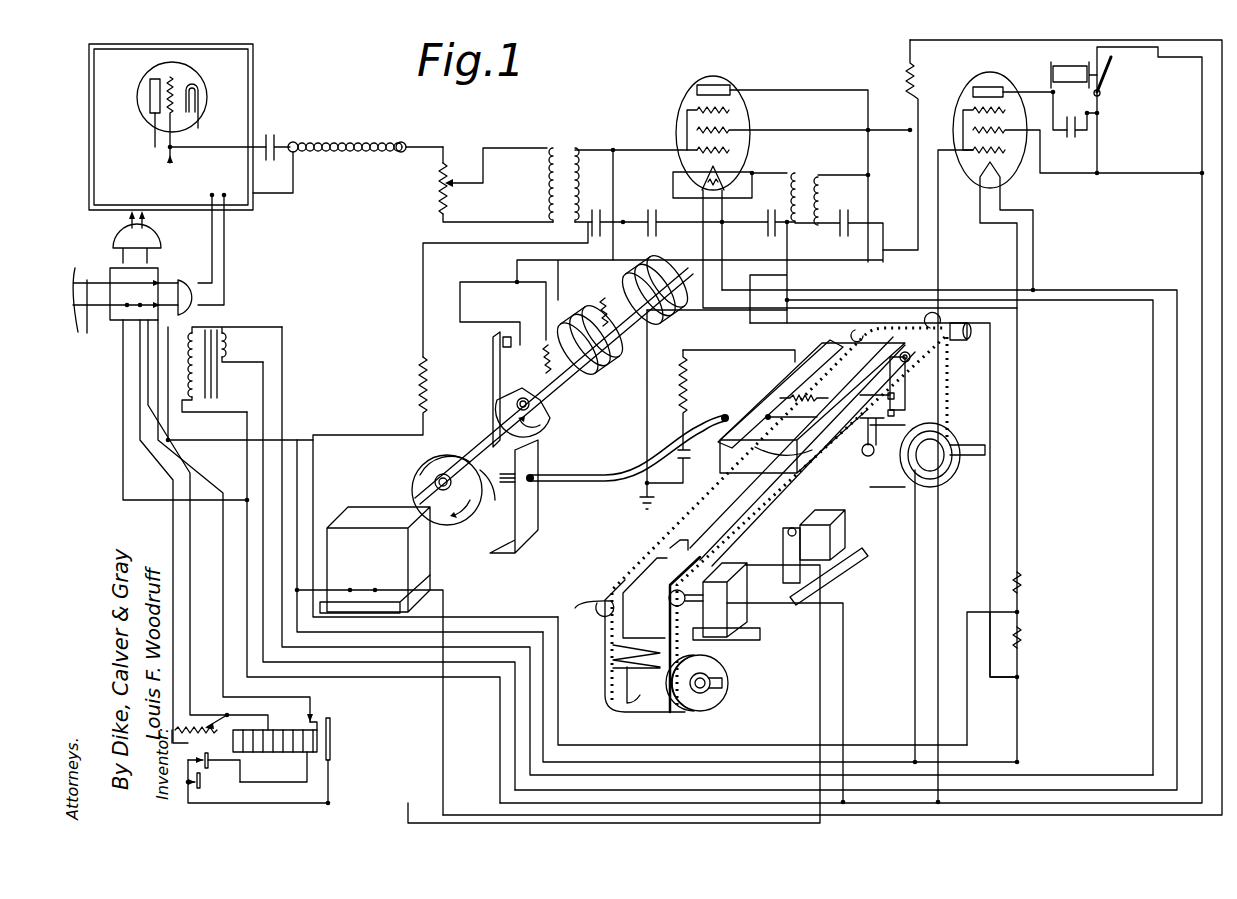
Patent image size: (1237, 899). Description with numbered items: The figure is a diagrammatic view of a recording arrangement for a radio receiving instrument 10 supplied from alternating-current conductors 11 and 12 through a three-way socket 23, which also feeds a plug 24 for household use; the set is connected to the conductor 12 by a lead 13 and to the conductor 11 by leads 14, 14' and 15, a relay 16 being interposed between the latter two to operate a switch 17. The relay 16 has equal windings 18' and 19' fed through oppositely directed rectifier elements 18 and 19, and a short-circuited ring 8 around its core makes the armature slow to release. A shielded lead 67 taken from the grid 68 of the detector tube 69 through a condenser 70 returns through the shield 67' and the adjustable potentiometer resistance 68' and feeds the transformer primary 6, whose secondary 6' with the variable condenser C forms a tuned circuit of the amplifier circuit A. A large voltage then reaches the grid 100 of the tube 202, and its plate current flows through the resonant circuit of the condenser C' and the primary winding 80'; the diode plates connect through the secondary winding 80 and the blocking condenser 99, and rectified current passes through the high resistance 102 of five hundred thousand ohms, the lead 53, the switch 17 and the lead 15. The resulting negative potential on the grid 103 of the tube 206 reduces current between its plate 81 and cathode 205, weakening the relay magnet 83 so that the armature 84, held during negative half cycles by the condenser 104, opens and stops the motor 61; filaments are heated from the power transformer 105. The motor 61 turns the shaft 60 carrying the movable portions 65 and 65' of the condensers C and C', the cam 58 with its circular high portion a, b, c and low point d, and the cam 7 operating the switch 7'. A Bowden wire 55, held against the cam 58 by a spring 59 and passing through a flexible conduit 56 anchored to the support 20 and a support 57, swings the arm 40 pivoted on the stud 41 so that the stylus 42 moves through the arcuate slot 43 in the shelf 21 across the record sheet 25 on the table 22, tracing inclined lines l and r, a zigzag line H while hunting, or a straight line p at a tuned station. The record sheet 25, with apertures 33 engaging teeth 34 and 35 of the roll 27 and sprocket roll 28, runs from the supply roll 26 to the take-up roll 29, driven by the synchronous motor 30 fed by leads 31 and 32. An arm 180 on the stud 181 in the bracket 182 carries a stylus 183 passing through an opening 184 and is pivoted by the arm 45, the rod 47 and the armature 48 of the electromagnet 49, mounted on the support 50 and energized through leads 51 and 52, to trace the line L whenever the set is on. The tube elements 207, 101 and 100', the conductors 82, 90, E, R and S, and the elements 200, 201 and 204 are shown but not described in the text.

The radio receiving instrument 10 is at (238, 63).
The detector tube 69 is at (150, 90).
The grid 68 is at (203, 117).
The plug 24 is at (153, 243).
The three-way socket 23 is at (120, 350).
The conductor 12 is at (125, 284).
The conductor 11 is at (84, 354).
The lead 13 is at (210, 262).
The lead 14 is at (232, 249).
The lead 15 is at (138, 392).
The lead 14' is at (197, 521).
The power transformer 105 is at (212, 380).
The condenser 70 is at (278, 141).
The shield 67' is at (348, 153).
The shielded lead 67 is at (480, 168).
The adjustable potentiometer resistance 68' is at (486, 170).
The radio-frequency transformer primary 6 is at (537, 185).
The transformer secondary 6' is at (555, 252).
The blocking condenser 99 is at (767, 226).
The amplifier tube 202 is at (740, 85).
The plate 207 is at (700, 90).
The grid 100 is at (799, 132).
The grid 101 is at (730, 170).
The cathode 100' is at (819, 235).
The tuned radio frequency amplifier circuit A is at (655, 144).
The secondary winding 80 is at (784, 248).
The primary winding 80' is at (841, 200).
The tube 206 is at (965, 88).
The plate 81 is at (1004, 88).
The grid 103 is at (997, 160).
The cathode 205 is at (978, 175).
The relay magnet 83 is at (1068, 70).
The armature 84 is at (1108, 76).
The condenser 104 is at (1071, 138).
The conductor 82 is at (1142, 106).
The conductor 90 is at (1145, 164).
The conductor E is at (1222, 232).
The conductor R is at (1183, 300).
The conductor S is at (1153, 485).
The high resistance 102 is at (428, 360).
The conductor 200 is at (516, 258).
The conductor 201 is at (546, 297).
The switch 7' is at (480, 389).
The cam 7 is at (554, 386).
The variable gang condenser C is at (571, 339).
The variable gang condenser C' is at (632, 289).
The movable portion 65 is at (615, 372).
The movable portion 65' is at (682, 319).
The shaft 60 is at (422, 472).
The low point d is at (458, 458).
The circular portion c is at (398, 486).
The circular portion a is at (490, 505).
The circular portion b is at (453, 518).
The cam 58 is at (462, 522).
The motor 61 is at (419, 627).
The support 57 is at (530, 527).
The flexible conduit 56 is at (555, 476).
The Bowden wire 55 is at (598, 482).
The support 20 is at (800, 378).
The stud 41 is at (798, 343).
The spring 59 is at (792, 396).
The arm 40 is at (805, 418).
The stylus 42 is at (783, 461).
The arcuate slot 43 is at (766, 442).
The shelf 21 is at (835, 445).
The table 22 is at (791, 442).
The rod 47 is at (850, 480).
The bracket 182 is at (900, 357).
The stud 181 is at (910, 358).
The arm 180 is at (892, 380).
The arm 45 is at (897, 405).
The stylus 183 is at (870, 436).
The opening 184 is at (872, 454).
The teeth 34 is at (858, 328).
The roll 27 is at (975, 332).
The supply roll 26 is at (940, 470).
The record sheet 25 is at (950, 410).
The apertures 33 is at (952, 430).
The zigzag line H is at (637, 685).
The sprocket roll 28 is at (602, 600).
The teeth 35 is at (600, 610).
The longitudinally inclined line r is at (645, 598).
The line p is at (680, 540).
The transversely inclined line l is at (665, 550).
The line L is at (757, 526).
The synchronous motor 30 is at (740, 628).
The take-up roll 29 is at (712, 698).
The armature 48 is at (785, 545).
The electro-magnet 49 is at (845, 530).
The support 50 is at (820, 590).
The lead 52 is at (940, 605).
The lead 51 is at (915, 605).
The lead 32 is at (818, 698).
The lead 31 is at (845, 690).
The lead 53 is at (778, 762).
The resistances 204 is at (1022, 626).
The relay 16 is at (275, 730).
The switch 17 is at (332, 753).
The rectifier element 18 is at (206, 750).
The rectifier element 19 is at (257, 782).
The winding 18' is at (260, 769).
The winding 19' is at (289, 769).
The short-circuited ring 8 is at (280, 772).